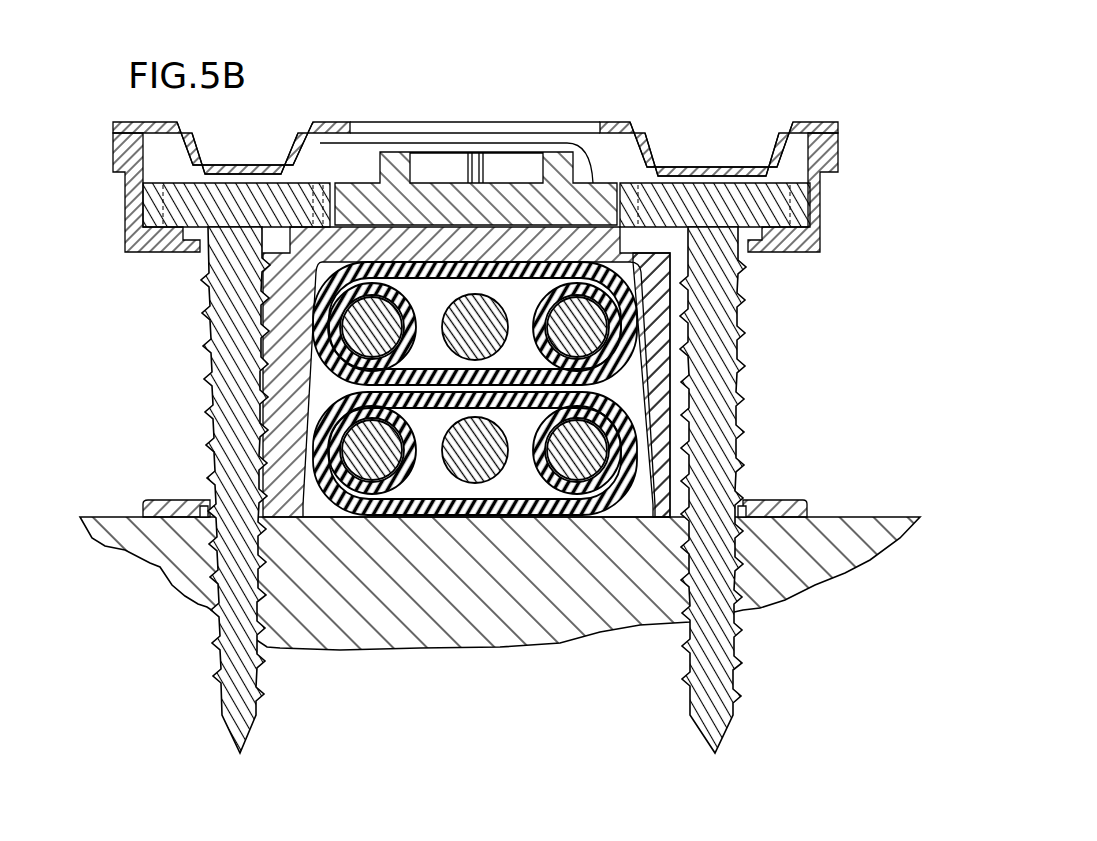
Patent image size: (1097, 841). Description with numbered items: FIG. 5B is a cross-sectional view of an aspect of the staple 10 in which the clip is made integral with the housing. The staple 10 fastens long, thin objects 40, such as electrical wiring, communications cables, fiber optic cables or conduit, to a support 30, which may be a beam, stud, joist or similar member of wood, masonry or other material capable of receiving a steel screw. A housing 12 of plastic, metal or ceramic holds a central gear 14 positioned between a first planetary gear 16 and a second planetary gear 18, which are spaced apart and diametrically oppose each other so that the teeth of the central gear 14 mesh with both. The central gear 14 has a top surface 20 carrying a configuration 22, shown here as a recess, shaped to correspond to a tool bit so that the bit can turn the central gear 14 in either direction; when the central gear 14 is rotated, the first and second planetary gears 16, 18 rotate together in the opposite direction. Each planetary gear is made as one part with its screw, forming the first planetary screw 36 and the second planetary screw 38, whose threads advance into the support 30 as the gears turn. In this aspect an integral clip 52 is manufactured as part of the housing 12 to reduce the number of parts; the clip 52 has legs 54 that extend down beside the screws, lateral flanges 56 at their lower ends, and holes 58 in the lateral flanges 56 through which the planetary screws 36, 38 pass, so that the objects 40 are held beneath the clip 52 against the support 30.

The staple 10 is at (737, 52).
The housing 12 is at (838, 165).
The central gear 14 is at (573, 152).
The first planetary gear 16 is at (188, 182).
The second planetary gear 18 is at (760, 182).
The top surface 20 is at (625, 122).
The configuration 22 is at (456, 151).
The support 30 is at (873, 517).
The first planetary screw 36 is at (206, 298).
The second planetary screw 38 is at (745, 321).
The long, thin objects 40 is at (618, 420).
The integral clip 52 is at (287, 360).
The legs 54 is at (283, 452).
The lateral flanges 56 is at (162, 500).
The holes 58 is at (207, 502).